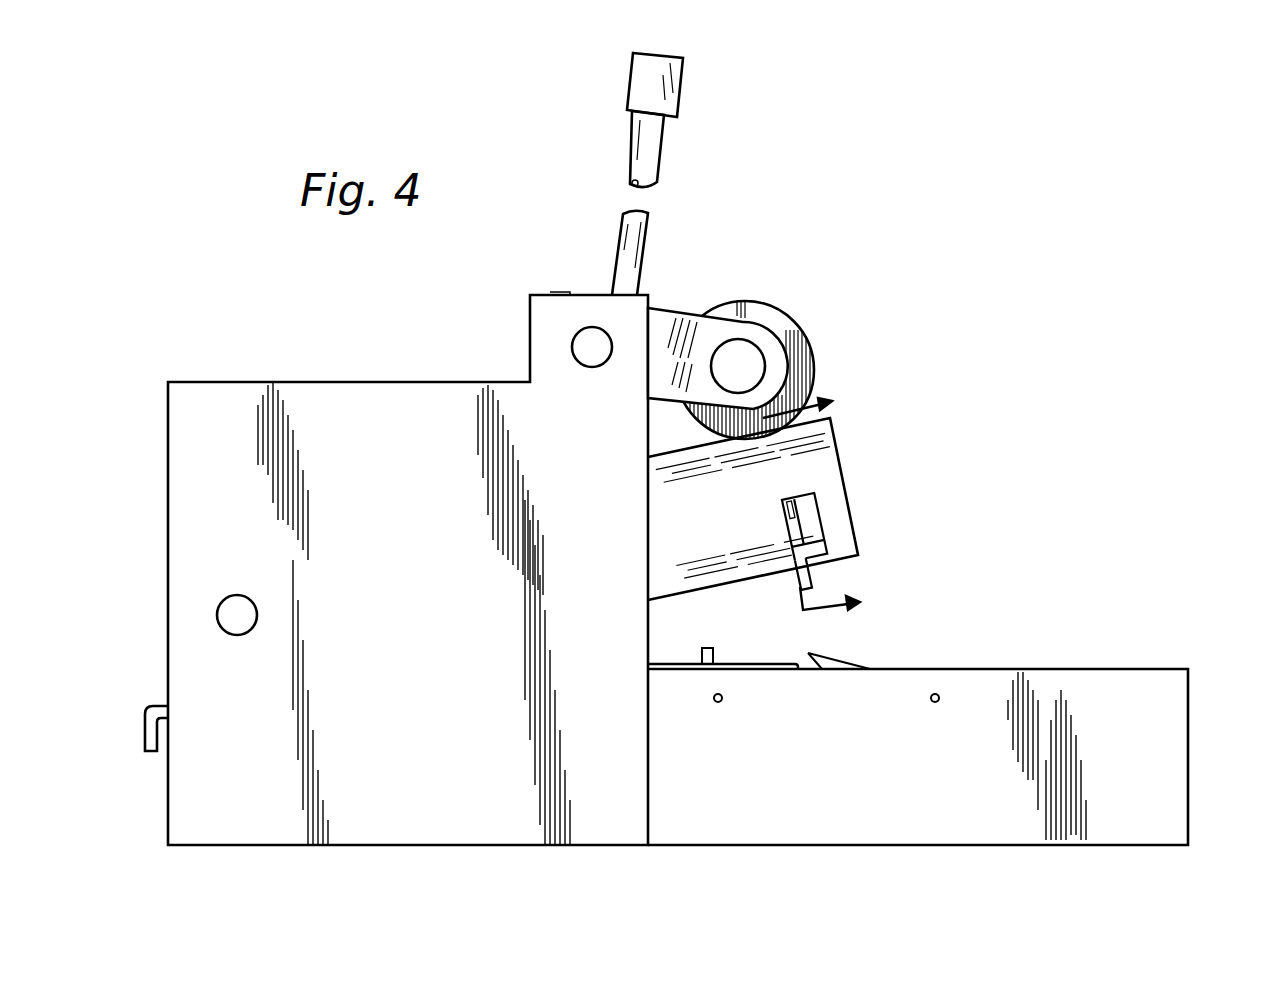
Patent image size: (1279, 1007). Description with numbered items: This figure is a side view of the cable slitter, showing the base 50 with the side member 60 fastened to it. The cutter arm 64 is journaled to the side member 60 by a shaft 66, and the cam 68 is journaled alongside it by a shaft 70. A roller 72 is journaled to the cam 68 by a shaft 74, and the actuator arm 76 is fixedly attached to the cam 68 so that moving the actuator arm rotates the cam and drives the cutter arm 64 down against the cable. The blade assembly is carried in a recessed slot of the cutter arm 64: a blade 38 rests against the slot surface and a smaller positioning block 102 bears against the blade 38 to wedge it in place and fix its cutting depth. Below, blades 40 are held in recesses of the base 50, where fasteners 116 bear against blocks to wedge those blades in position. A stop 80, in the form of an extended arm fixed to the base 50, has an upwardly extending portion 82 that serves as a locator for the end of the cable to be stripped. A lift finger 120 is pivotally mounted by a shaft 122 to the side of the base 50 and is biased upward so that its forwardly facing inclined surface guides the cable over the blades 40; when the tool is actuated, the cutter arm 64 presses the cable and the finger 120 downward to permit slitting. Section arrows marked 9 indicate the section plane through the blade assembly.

The blade 38 is at (790, 582).
The blade 40 is at (784, 663).
The base 50 is at (1190, 733).
The side member 60 is at (168, 498).
The cutter arm 64 is at (858, 497).
The shaft 66 is at (240, 595).
The cam 68 is at (701, 285).
The shaft 70 is at (572, 347).
The roller 72 is at (782, 306).
The shaft 74 is at (760, 370).
The actuator arm 76 is at (658, 168).
The stop 80 is at (145, 710).
The upwardly extending portion 82 is at (708, 648).
The positioning block 102 is at (804, 498).
The fastener 116 is at (721, 701).
The lift finger 120 is at (853, 660).
The shaft 122 is at (935, 702).
The section line 9- 9 is at (824, 499).